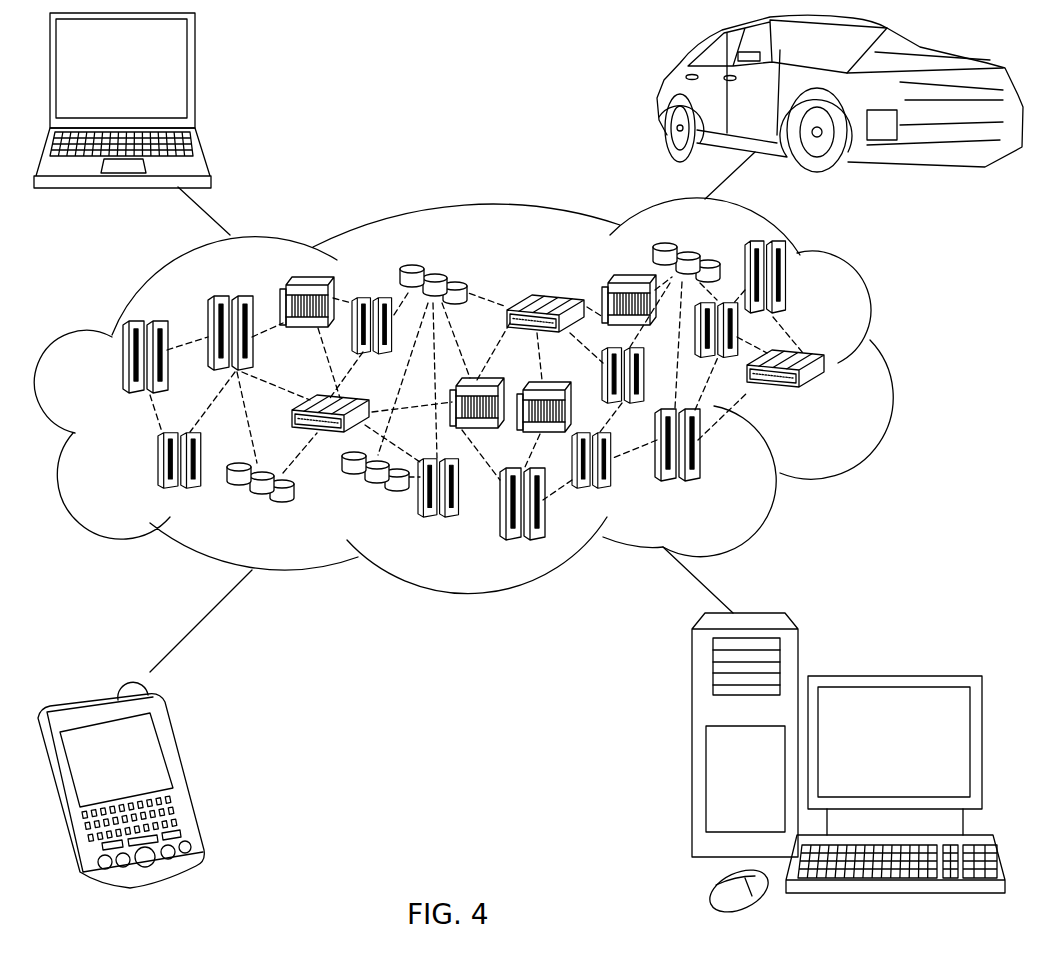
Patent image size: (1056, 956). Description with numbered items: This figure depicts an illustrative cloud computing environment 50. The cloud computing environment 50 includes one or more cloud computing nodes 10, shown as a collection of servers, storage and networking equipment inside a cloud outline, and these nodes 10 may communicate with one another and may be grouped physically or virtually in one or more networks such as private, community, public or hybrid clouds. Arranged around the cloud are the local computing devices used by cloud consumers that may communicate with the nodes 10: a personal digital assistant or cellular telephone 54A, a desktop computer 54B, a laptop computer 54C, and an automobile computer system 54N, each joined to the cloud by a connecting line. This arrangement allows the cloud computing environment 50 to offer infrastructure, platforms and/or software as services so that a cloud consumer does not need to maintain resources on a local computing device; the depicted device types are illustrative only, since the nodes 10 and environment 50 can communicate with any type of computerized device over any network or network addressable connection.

The cloud computing node 10 is at (846, 402).
The cloud computing environment 50 is at (892, 368).
The personal digital assistant (PDA) or cellular telephone 54A is at (187, 773).
The desktop computer 54B is at (890, 675).
The laptop computer 54C is at (196, 79).
The automobile computer system 54N is at (660, 95).